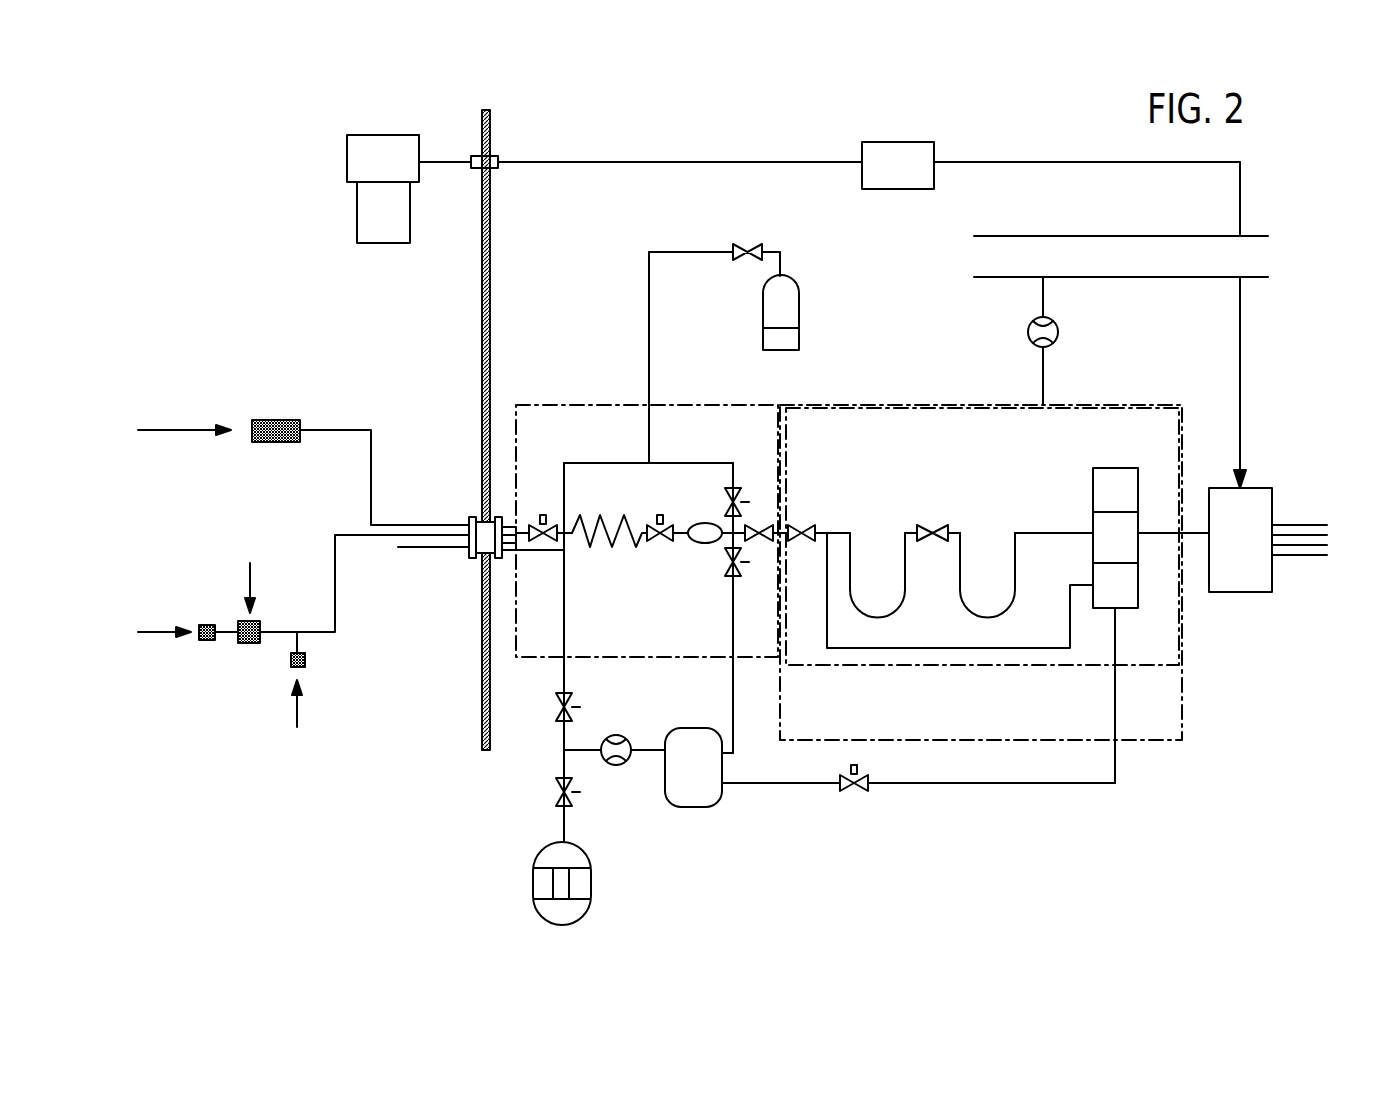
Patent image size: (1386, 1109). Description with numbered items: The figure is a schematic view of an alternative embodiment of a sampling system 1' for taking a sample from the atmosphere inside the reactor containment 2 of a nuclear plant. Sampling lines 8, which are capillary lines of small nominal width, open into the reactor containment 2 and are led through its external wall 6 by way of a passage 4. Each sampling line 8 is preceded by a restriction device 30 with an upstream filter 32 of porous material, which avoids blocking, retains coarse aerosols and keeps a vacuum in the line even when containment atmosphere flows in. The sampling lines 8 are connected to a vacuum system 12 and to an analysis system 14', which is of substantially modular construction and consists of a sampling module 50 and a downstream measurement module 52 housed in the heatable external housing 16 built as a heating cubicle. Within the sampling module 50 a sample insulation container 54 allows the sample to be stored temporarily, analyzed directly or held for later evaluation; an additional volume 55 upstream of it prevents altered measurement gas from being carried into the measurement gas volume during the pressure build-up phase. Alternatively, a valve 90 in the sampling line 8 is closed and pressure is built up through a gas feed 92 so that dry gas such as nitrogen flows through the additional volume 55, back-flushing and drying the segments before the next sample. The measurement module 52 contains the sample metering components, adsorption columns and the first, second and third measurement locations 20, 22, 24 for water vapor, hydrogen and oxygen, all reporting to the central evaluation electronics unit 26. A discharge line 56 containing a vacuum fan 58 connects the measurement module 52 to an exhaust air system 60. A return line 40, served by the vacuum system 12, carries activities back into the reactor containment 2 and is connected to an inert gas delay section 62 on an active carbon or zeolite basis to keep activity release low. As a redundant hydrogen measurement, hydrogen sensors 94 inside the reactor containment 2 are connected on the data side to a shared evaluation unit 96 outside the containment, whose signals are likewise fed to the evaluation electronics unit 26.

The sampling system 1' is at (1037, 118).
The reactor containment 2 is at (357, 328).
The passage 4 is at (476, 517).
The external wall 6 is at (481, 338).
The sampling line 8 is at (336, 432).
The vacuum system 12 is at (617, 766).
The analysis system 14' is at (910, 855).
The external housing 16 is at (918, 405).
The first measurement location 20 is at (1118, 492).
The second measurement location 22 is at (1118, 530).
The third measurement location 24 is at (1118, 578).
The central evaluation electronics unit 26 is at (1252, 488).
The restriction device 30 is at (279, 420).
The filter 32 is at (259, 442).
The return line 40 is at (432, 549).
The sampling module 50 is at (585, 404).
The measurement module 52 is at (1163, 404).
The sample insulation container 54 is at (705, 545).
The additional volume 55 is at (604, 514).
The discharge line 56 is at (1042, 298).
The vacuum fan 58 is at (1059, 333).
The exhaust air system 60 is at (1115, 258).
The inert gas delay section 62 is at (592, 886).
The valve 90 is at (543, 514).
The gas feed 92 is at (691, 250).
The hydrogen sensor 94 is at (383, 133).
The evaluation unit 96 is at (898, 140).